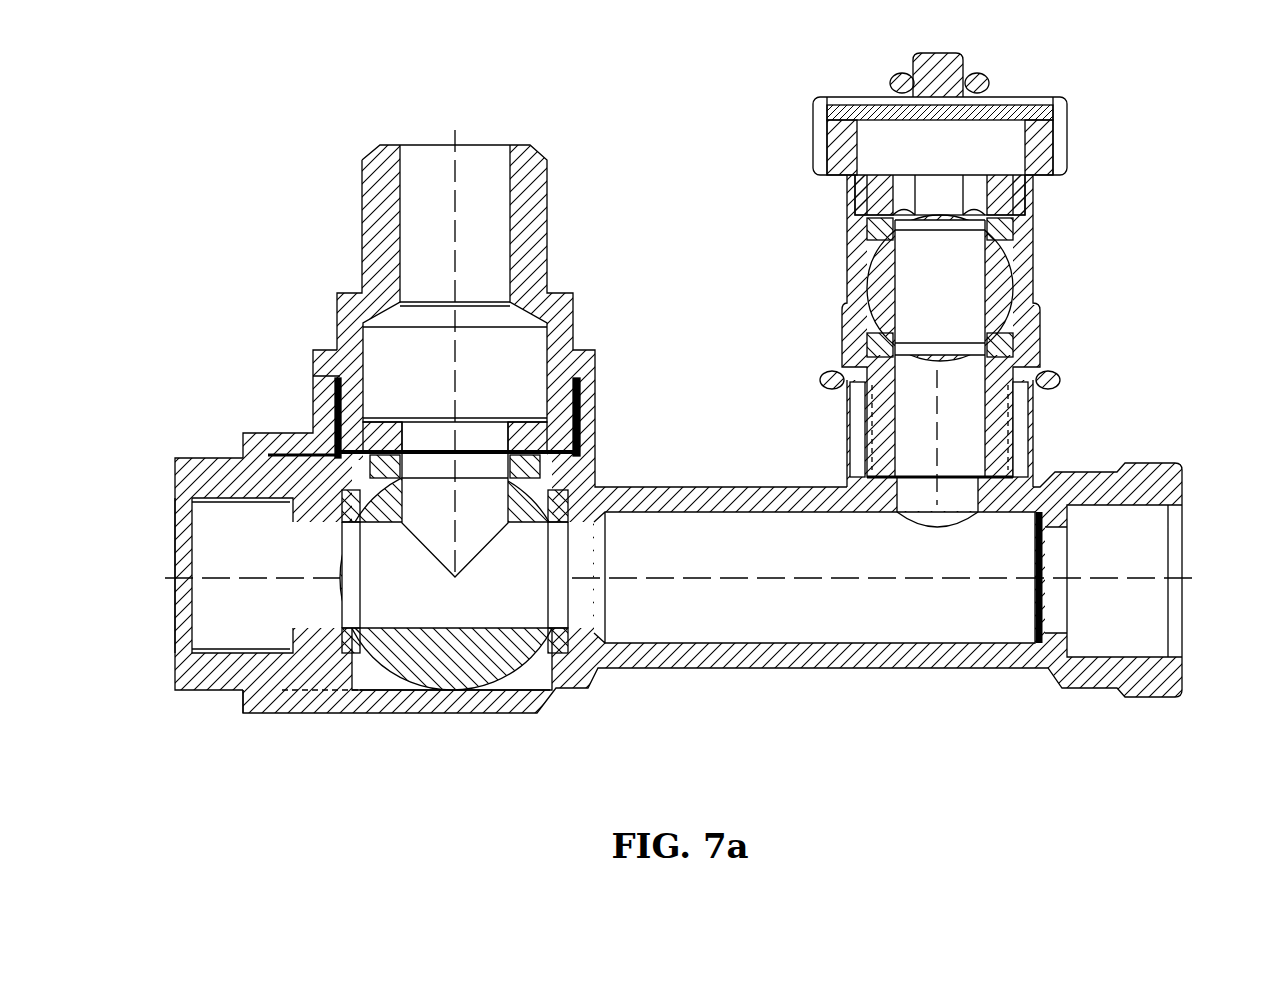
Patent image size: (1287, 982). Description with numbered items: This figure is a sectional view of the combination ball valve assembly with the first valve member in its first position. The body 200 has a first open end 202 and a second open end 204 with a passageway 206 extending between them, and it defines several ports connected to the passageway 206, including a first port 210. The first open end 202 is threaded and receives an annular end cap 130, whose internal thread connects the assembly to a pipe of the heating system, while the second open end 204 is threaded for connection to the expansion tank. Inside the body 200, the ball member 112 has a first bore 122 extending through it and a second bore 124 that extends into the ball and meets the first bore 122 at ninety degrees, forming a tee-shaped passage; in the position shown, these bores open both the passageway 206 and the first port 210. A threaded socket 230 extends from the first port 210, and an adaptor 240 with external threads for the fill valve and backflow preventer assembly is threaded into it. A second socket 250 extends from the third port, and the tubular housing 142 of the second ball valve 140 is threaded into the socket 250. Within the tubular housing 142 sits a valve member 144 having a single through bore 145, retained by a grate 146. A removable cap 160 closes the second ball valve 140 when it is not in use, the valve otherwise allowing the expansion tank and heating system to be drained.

The body 200 is at (908, 680).
The first open end 202 is at (242, 698).
The second open end 204 is at (1157, 532).
The passageway 206 is at (806, 571).
The annular end cap 130 is at (174, 673).
The ball member 112 is at (421, 674).
The first bore 122 is at (538, 615).
The second bore 124 is at (410, 515).
The first port 210 is at (562, 488).
The socket 230 is at (335, 412).
The adaptor 240 is at (358, 216).
The second ball valve 140 is at (822, 240).
The tubular housing 142 is at (1038, 322).
The valve member 144 is at (1012, 284).
The through bore 145 is at (956, 316).
The grate 146 is at (1027, 193).
The removable cap 160 is at (1067, 110).
The socket 250 is at (1025, 432).